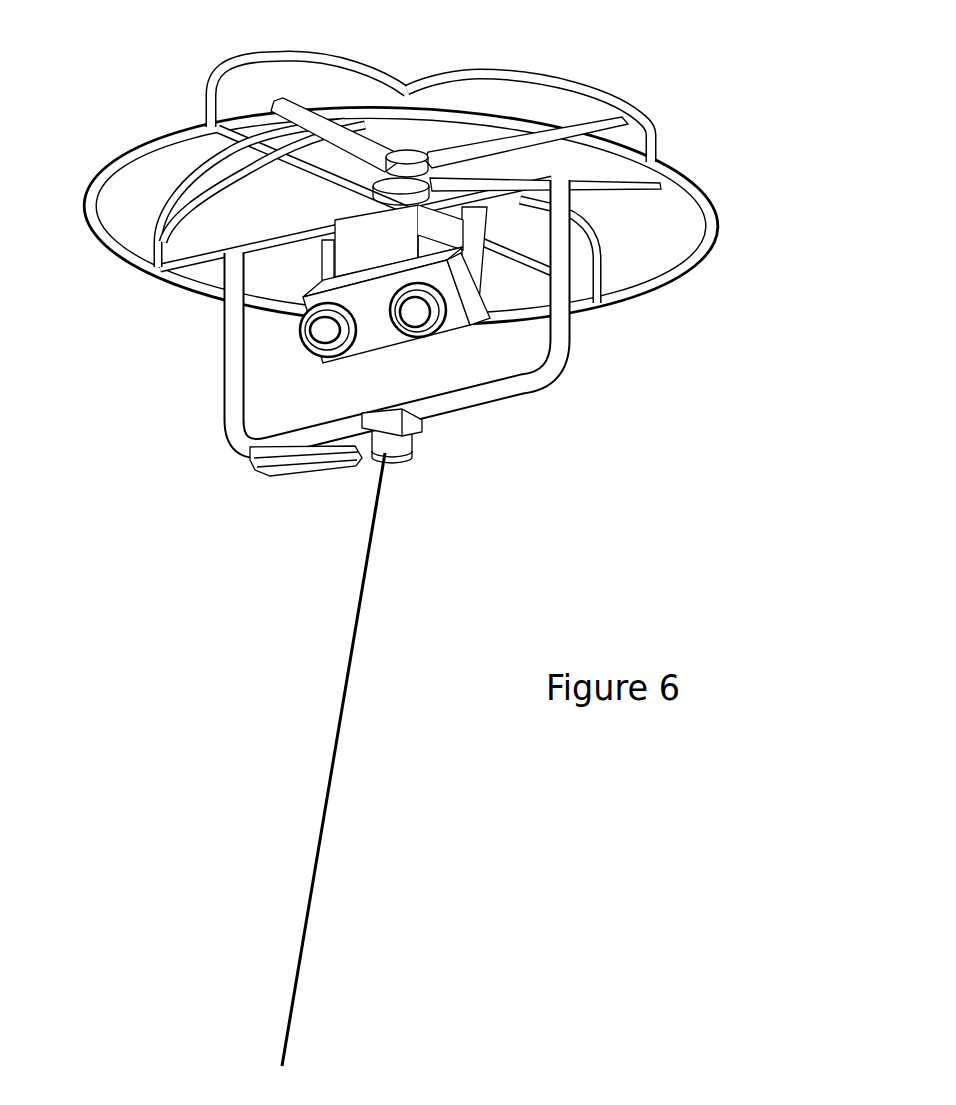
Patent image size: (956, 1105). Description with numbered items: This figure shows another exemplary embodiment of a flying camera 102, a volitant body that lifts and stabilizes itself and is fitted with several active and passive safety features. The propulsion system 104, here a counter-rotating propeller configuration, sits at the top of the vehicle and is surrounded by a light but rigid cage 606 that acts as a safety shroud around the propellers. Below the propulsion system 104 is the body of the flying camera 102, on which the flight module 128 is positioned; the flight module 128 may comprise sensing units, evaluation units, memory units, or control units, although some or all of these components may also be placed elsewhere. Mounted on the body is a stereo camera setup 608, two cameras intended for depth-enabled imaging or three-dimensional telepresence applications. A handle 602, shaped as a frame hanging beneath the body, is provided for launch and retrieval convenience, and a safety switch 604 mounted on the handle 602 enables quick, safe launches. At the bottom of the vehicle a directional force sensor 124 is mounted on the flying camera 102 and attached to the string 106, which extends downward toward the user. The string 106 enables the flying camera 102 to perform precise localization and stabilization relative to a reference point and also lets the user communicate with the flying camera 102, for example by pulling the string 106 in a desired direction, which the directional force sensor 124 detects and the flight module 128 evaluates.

The flying camera 102 is at (439, 544).
The propulsion/stabilization system 104 is at (432, 177).
The string 106 is at (358, 663).
The directional force sensor 124 is at (418, 450).
The flight module 128 is at (350, 238).
The handle 602 is at (567, 377).
The safety switch 604 is at (270, 483).
The cage 606 is at (198, 80).
The stereo camera setup 608 is at (293, 337).